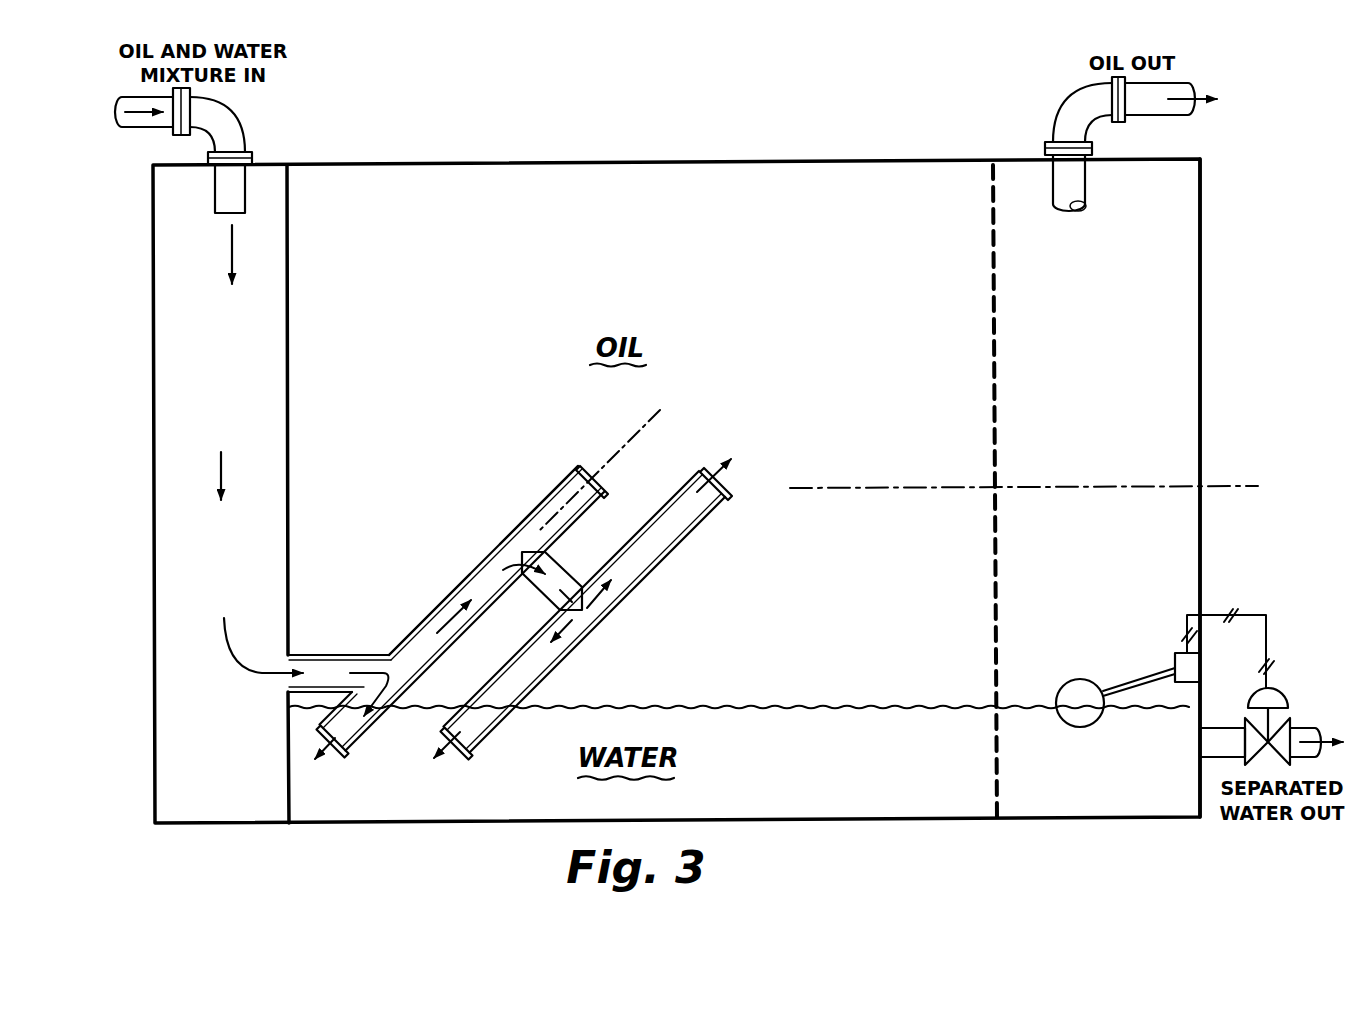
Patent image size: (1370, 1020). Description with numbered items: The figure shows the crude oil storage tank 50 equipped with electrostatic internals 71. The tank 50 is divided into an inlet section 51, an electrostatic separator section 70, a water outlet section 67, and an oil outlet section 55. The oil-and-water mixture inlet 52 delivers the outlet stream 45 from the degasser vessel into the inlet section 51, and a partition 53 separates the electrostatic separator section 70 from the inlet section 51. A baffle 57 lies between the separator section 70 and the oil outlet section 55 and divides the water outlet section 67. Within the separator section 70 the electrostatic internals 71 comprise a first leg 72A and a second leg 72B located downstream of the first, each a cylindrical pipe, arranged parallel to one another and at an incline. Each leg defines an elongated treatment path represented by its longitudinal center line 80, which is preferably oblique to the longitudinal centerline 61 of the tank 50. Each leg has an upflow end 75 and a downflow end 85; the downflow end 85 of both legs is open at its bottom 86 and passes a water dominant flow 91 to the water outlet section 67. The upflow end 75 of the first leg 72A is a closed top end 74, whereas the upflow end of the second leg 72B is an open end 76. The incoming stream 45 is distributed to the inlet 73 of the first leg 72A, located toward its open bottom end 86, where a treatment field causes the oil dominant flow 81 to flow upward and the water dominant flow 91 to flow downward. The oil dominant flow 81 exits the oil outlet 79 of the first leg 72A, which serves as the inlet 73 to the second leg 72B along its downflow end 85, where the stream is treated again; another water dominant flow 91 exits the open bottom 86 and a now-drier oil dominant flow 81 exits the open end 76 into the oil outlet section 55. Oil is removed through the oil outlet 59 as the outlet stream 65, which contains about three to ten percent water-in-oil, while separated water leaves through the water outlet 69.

The outlet stream from degasser vessel 45 is at (121, 115).
The crude oil storage tank 50 is at (526, 162).
The inlet section 51 is at (188, 390).
The oil-and-water mixture inlet 52 is at (240, 128).
The partition 53 is at (290, 384).
The oil outlet section 55 is at (1115, 357).
The baffle 57 is at (991, 362).
The oil outlet 59 is at (1067, 117).
The longitudinal centerline of tank 61 is at (1126, 490).
The outlet stream from tank 65 is at (1197, 93).
The water outlet section 67 is at (767, 730).
The water outlet 69 is at (1222, 727).
The electrostatic separator section 70 is at (718, 207).
The electrostatic internals 71 is at (435, 612).
The first leg 72A is at (520, 524).
The second leg 72B is at (663, 550).
The inlet 73 is at (331, 650).
The closed top end 74 is at (584, 477).
The upflow end 75 is at (567, 483).
The open bottom end 76 is at (702, 493).
The oil outlet 79 is at (545, 552).
The longitudinal center line 80 is at (637, 436).
The oil-dominant flow 81 is at (585, 598).
The downflow end 85 is at (370, 733).
The water outlet 86 is at (330, 757).
The water-dominant flow 91 is at (567, 630).